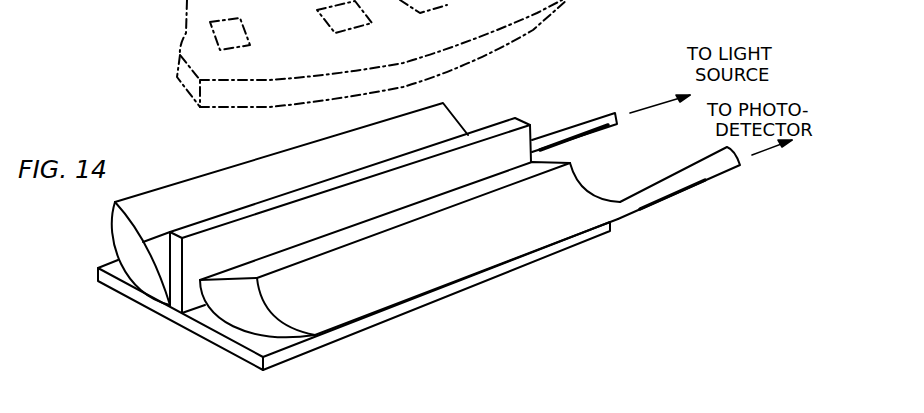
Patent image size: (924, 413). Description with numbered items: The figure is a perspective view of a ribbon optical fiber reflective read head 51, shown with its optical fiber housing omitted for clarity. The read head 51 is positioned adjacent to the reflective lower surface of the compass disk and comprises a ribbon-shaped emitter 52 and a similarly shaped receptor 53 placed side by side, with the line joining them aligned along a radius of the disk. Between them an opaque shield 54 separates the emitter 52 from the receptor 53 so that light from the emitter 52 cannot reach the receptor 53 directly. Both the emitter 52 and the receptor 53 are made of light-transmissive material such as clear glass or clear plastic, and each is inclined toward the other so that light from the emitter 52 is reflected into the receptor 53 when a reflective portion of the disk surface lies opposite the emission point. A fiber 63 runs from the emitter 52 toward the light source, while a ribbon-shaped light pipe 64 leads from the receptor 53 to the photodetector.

The fiber optic read head 51 is at (133, 343).
The ribbon-shaped emitter 52 is at (265, 204).
The receptor 53 is at (342, 237).
The opaque shield 54 is at (197, 260).
The optical fiber to light source 63 is at (592, 123).
The optical fiber to photodetector 64 is at (668, 183).